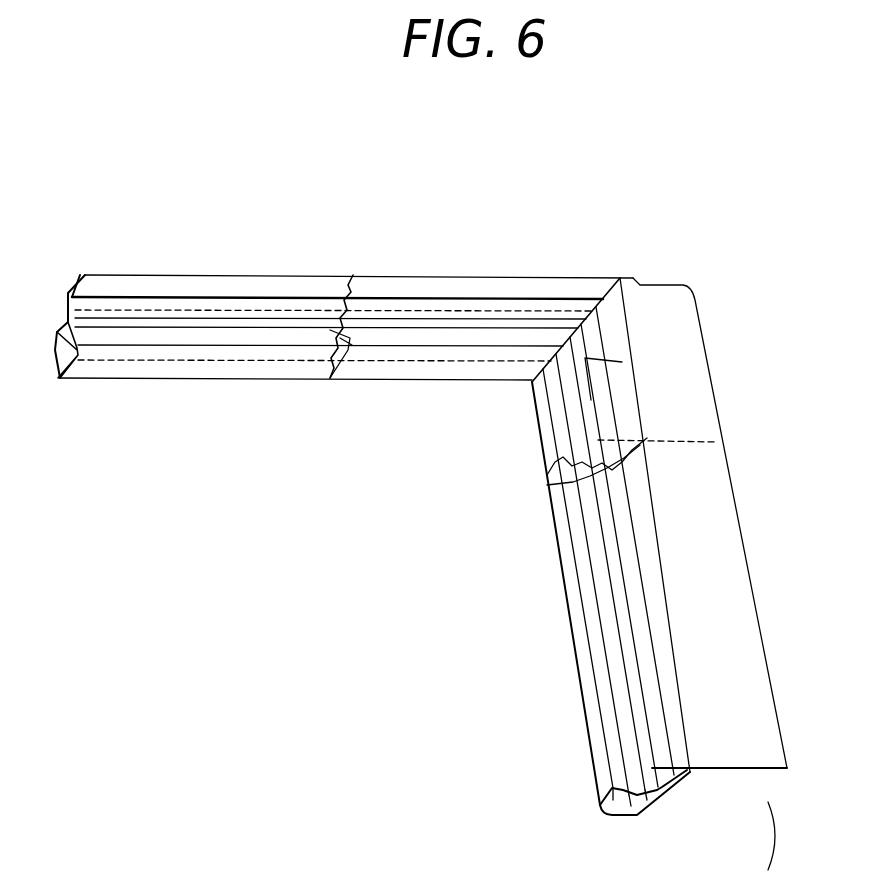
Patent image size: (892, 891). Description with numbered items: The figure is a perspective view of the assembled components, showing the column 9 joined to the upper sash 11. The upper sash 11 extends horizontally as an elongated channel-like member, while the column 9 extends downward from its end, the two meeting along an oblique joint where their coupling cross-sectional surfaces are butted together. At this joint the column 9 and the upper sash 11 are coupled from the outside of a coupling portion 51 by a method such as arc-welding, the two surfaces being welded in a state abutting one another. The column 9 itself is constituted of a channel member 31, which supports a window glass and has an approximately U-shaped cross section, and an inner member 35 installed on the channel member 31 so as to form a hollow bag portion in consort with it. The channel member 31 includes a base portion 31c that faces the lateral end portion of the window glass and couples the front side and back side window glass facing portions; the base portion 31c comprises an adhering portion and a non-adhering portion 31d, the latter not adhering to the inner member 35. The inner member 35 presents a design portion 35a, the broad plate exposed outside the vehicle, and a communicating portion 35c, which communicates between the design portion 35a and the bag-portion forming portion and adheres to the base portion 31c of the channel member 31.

The upper sash 11 is at (269, 258).
The column 9 is at (782, 836).
The channel member 31 is at (668, 782).
The base portion 31c is at (660, 775).
The non-adhering portion 31d is at (620, 278).
The inner member 35 is at (728, 556).
The design portion 35a is at (720, 503).
The communicating portion 35c is at (692, 770).
The coupling portion 51 is at (600, 357).